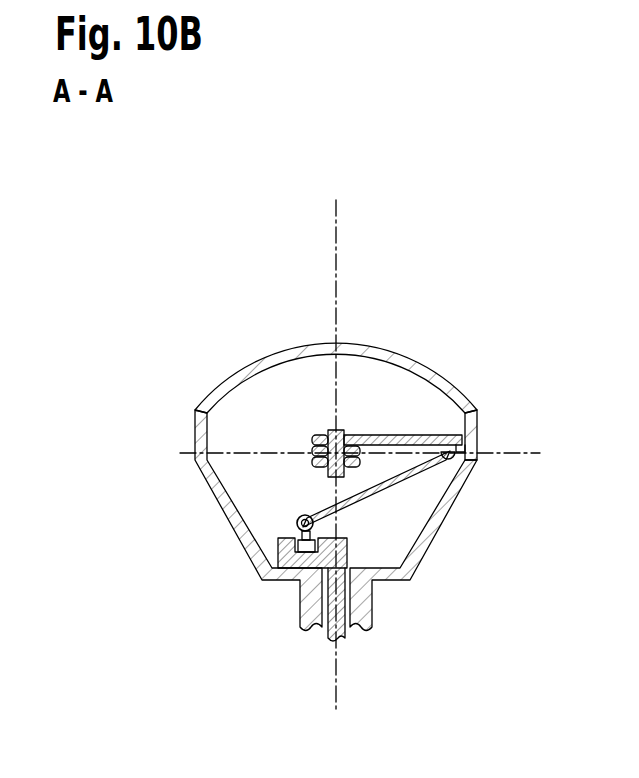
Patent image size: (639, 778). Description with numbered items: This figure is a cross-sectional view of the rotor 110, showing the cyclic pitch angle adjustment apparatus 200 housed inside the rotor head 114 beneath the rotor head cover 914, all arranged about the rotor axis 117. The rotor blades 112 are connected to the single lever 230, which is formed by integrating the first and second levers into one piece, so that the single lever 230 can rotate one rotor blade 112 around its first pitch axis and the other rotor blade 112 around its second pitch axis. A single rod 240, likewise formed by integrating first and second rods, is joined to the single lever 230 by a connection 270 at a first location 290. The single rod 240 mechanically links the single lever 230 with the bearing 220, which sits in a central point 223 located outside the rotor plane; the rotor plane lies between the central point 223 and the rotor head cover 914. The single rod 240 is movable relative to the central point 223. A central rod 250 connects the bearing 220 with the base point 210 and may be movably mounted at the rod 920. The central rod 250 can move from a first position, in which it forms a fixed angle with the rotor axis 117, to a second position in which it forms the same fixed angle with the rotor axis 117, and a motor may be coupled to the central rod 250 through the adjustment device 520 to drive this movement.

The rotor 110 is at (180, 212).
The rotor blades 112 is at (312, 460).
The rotor head 114 is at (431, 562).
The rotor axis 117 is at (338, 700).
The cyclic pitch angle adjustment apparatus 200 is at (530, 330).
The base point 210 is at (296, 574).
The bearing 220 is at (296, 522).
The central point 223 is at (292, 505).
The single lever 230 is at (430, 435).
The single rod 240 is at (418, 494).
The central rod 250 is at (300, 553).
The connection 270 is at (458, 453).
The first location 290 is at (476, 417).
The adjustment device 520 is at (364, 534).
The rotor head cover 914 is at (378, 344).
The rod 920 is at (321, 636).